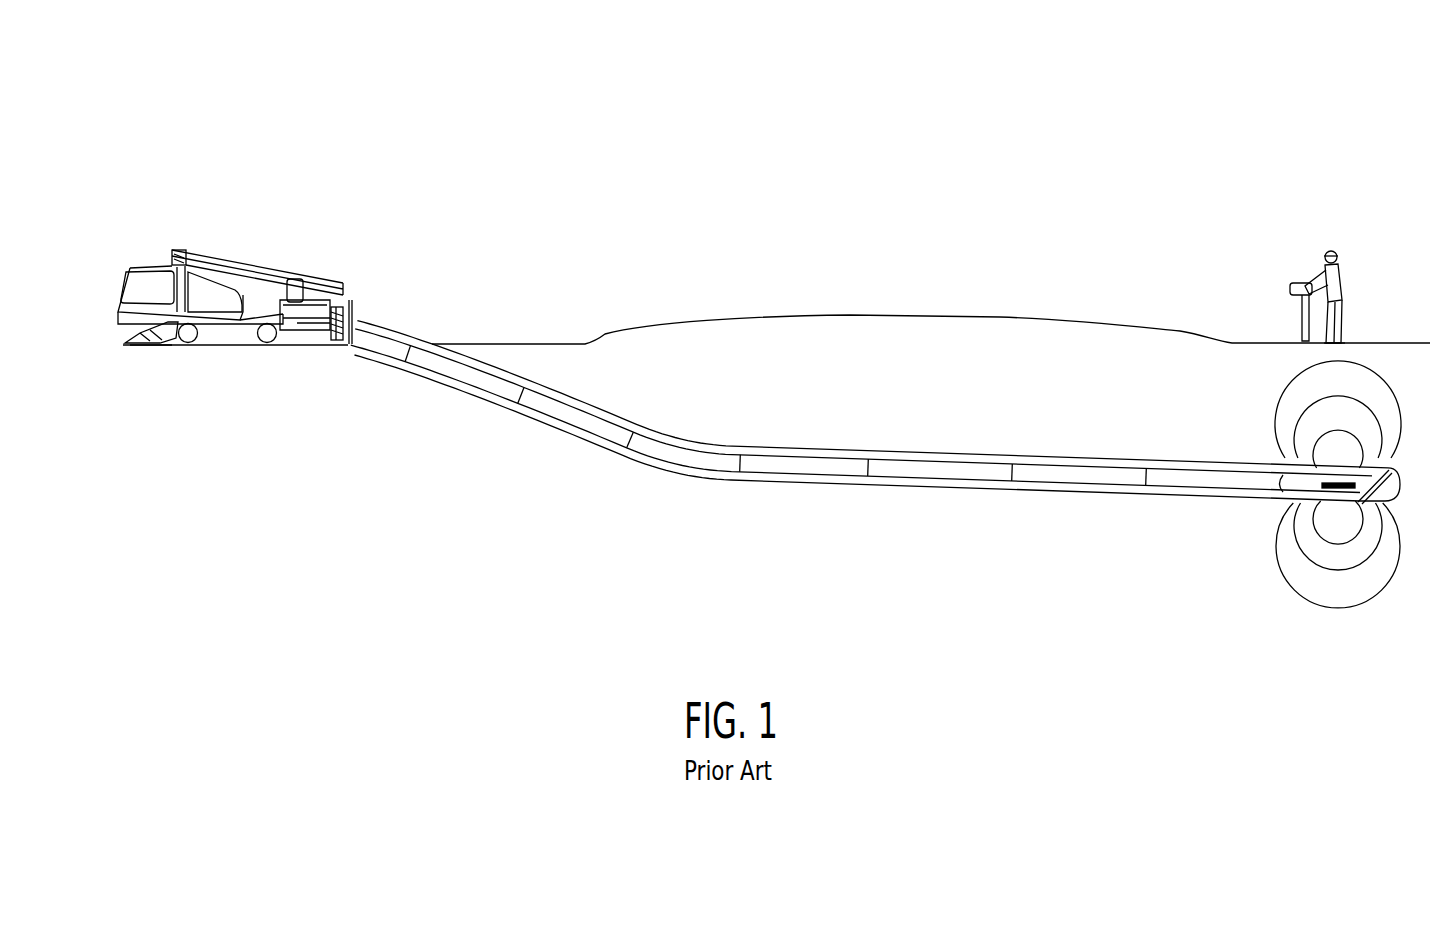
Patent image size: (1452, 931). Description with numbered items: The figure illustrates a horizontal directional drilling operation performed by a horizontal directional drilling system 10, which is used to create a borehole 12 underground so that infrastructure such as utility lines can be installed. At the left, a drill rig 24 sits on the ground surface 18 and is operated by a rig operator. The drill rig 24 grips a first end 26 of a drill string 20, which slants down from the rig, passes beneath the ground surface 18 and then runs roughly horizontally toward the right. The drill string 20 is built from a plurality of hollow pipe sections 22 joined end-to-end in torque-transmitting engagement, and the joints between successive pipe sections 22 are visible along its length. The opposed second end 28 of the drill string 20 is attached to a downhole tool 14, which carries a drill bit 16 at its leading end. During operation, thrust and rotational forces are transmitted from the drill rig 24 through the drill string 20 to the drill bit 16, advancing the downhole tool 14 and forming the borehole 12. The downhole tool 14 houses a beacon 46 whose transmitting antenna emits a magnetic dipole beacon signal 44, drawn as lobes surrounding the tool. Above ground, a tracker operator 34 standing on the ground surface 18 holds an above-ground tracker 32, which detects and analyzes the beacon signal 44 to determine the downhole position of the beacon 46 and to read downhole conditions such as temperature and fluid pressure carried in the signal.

The horizontal directional drilling system 10 is at (608, 147).
The borehole 12 is at (872, 411).
The downhole tool 14 is at (1284, 451).
The drill bit 16 is at (1405, 496).
The ground surface 18 is at (776, 304).
The drill string 20 is at (740, 517).
The hollow pipe sections 22 is at (861, 443).
The drill rig 24 is at (236, 267).
The first end 26 is at (393, 304).
The second end 28 is at (1226, 513).
The above-ground tracker 32 is at (1258, 292).
The tracker operator 34 is at (1366, 271).
The beacon signal 44 is at (1313, 508).
The beacon 46 is at (1265, 422).